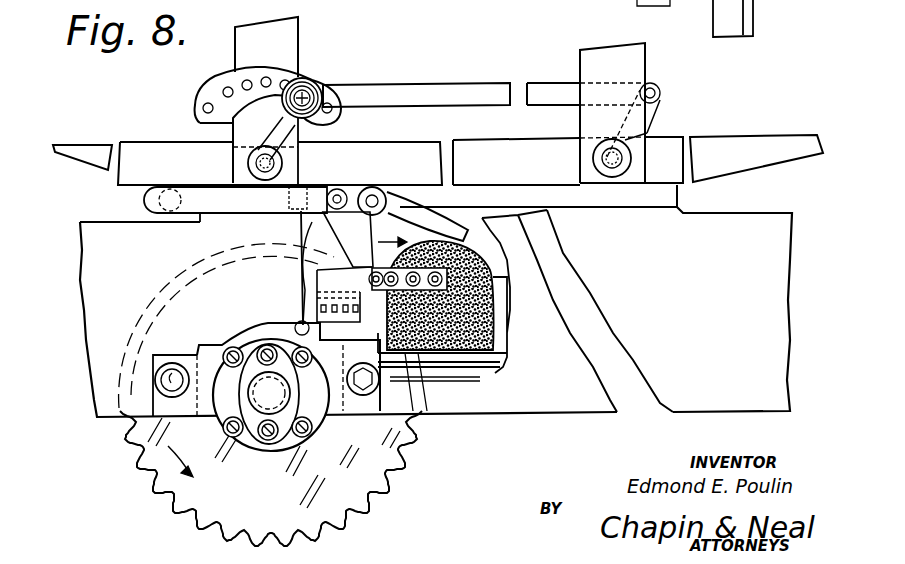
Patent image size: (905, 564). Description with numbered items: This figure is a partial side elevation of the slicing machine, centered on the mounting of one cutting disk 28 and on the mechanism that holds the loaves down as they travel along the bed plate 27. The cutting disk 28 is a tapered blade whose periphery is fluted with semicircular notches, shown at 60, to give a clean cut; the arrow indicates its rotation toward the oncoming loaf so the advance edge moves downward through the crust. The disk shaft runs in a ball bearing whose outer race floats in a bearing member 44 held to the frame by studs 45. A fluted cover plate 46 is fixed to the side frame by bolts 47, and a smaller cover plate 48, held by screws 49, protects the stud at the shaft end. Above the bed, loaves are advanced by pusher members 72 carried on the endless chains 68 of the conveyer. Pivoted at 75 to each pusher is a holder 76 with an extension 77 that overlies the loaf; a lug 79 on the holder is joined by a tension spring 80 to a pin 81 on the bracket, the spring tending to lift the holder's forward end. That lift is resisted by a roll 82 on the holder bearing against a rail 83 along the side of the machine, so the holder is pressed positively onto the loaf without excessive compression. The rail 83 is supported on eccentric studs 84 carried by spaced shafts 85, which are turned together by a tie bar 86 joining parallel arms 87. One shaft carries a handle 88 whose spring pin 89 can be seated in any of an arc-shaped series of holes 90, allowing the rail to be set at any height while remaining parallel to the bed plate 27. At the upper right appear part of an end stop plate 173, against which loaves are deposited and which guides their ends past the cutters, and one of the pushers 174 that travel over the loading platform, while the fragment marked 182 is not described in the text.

The bed plate 27 is at (498, 360).
The cutting disks 28 is at (327, 511).
The bearing member 44 is at (203, 410).
The studs 45 is at (180, 347).
The cover plates 46 is at (315, 398).
The bolts 47 is at (190, 475).
The smaller cover plate 48 is at (305, 447).
The screws 49 is at (267, 345).
The fluting 60 is at (380, 487).
The endless chains 68 is at (483, 253).
The pusher members 72 is at (433, 378).
The pivot 75 is at (340, 187).
The holder 76 is at (357, 187).
The extension 77 is at (420, 230).
The lug 79 is at (288, 185).
The tension spring 80 is at (319, 270).
The pin 81 is at (288, 293).
The roll 82 is at (387, 190).
The rail 83 is at (497, 153).
The eccentric studs 84 is at (247, 160).
The shafts 85 is at (257, 168).
The tie bar 86 is at (427, 93).
The arms 87 is at (280, 117).
The handle 88 is at (300, 148).
The spring pin 89 is at (313, 80).
The holes 90 is at (227, 90).
The end stop plate 173 is at (504, 328).
The pushers 174 is at (740, 20).
The member 182 is at (634, 4).